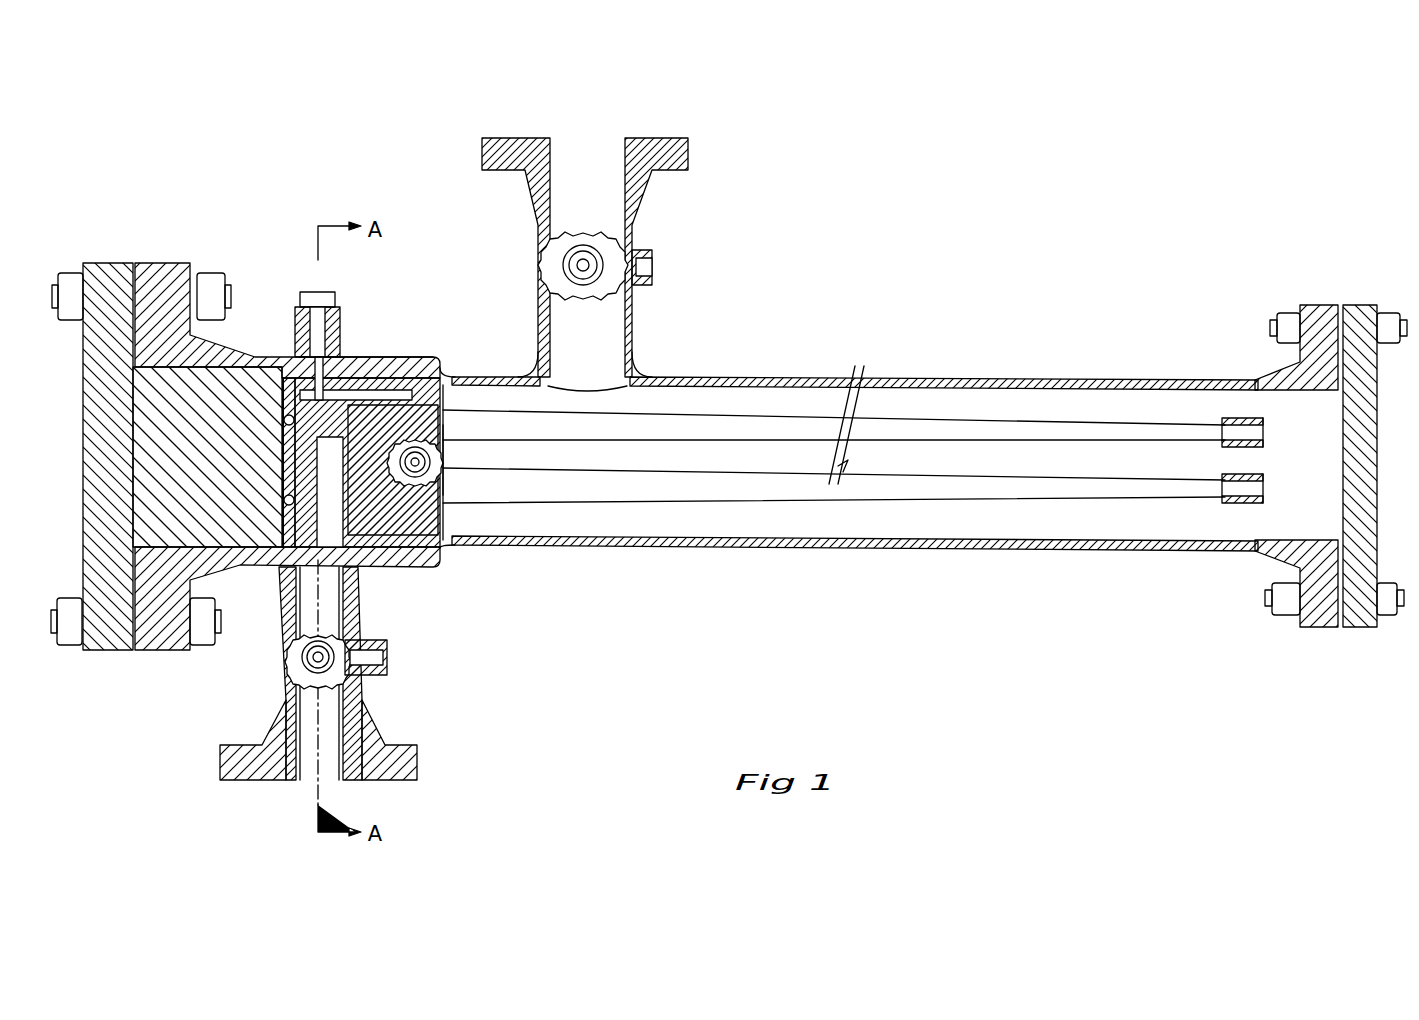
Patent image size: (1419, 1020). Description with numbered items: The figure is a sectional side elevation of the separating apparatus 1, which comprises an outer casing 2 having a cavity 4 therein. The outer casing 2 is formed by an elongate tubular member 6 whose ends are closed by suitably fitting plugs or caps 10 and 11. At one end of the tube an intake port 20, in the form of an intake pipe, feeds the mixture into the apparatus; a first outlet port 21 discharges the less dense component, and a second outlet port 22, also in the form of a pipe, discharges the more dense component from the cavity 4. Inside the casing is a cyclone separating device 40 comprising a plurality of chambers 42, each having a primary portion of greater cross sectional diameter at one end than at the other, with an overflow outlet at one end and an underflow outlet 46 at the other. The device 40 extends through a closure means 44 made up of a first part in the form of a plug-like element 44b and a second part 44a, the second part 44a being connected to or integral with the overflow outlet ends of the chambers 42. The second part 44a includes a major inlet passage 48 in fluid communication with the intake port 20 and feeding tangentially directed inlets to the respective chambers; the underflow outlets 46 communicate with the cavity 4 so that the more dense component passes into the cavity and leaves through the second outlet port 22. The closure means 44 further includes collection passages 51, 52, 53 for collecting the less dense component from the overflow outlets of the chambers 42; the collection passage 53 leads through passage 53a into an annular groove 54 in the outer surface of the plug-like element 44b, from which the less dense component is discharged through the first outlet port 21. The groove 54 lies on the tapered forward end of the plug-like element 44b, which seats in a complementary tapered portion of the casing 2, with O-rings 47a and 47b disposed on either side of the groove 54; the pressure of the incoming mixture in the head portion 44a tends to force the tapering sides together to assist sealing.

The apparatus 1 is at (710, 328).
The outer casing 2 is at (1132, 555).
The cavity 4 is at (1013, 520).
The elongate tubular member 6 is at (668, 552).
The cap 10 is at (105, 348).
The cap 11 is at (1378, 558).
The intake port 20 is at (312, 770).
The first outlet port 21 is at (447, 520).
The second outlet port 22 is at (588, 132).
The cyclone separating device 40 is at (571, 530).
The separating chambers 42 is at (670, 428).
The closure means 44 is at (278, 604).
The second part of closure means 44a is at (438, 425).
The plug-like element 44b is at (440, 356).
The underflow outlet 46 is at (1258, 433).
The O-ring 47a is at (403, 538).
The O-ring 47b is at (448, 522).
The major inlet passage 48 is at (364, 576).
The collection passage 51 is at (262, 358).
The collection passage 52 is at (284, 358).
The collection passage 53 is at (345, 358).
The passage 53a is at (375, 385).
The annular groove 54 is at (432, 356).